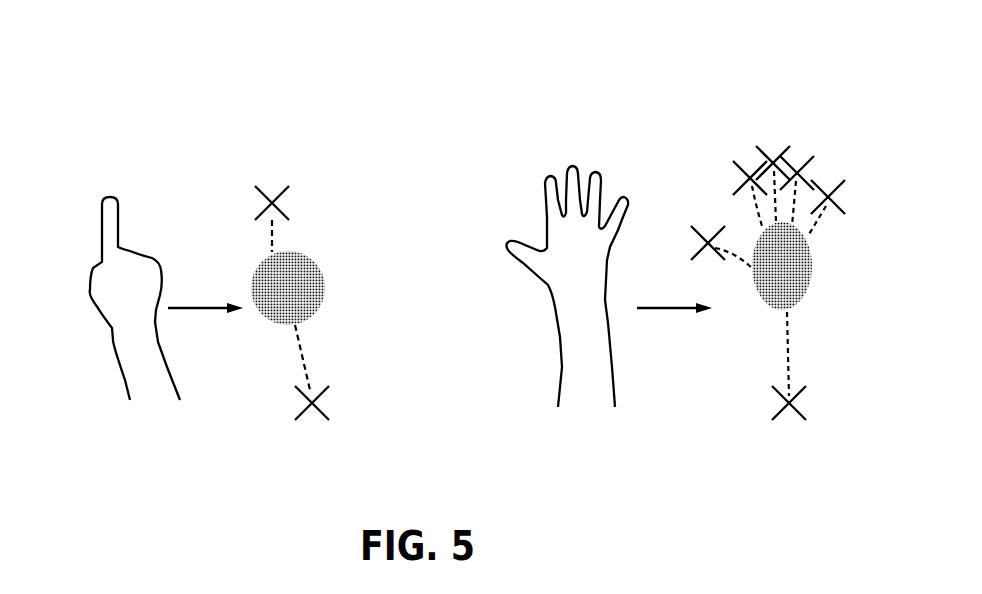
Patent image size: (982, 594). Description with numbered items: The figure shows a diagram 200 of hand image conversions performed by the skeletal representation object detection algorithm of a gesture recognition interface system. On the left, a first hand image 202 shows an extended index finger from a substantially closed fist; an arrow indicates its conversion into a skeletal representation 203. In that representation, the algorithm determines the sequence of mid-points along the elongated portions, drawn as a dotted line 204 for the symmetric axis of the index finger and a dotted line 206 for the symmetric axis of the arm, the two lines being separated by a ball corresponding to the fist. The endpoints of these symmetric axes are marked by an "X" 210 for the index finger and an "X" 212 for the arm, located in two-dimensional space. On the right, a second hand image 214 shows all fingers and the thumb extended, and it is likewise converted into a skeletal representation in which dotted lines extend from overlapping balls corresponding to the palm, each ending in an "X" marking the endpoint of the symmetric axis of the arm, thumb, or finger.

The diagram 200 is at (102, 49).
The first hand image 202 is at (71, 344).
The skeletal representation 203 is at (350, 203).
The dotted line 204 is at (268, 230).
The dotted line 206 is at (300, 352).
The "X" 210 is at (242, 192).
The "X" 212 is at (289, 408).
The second hand image 214 is at (517, 313).